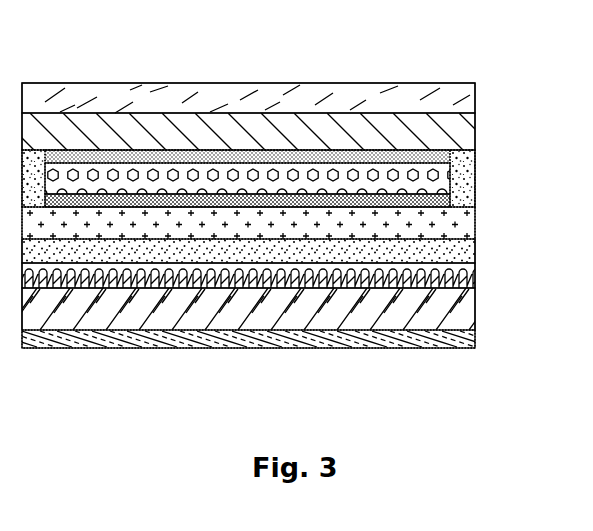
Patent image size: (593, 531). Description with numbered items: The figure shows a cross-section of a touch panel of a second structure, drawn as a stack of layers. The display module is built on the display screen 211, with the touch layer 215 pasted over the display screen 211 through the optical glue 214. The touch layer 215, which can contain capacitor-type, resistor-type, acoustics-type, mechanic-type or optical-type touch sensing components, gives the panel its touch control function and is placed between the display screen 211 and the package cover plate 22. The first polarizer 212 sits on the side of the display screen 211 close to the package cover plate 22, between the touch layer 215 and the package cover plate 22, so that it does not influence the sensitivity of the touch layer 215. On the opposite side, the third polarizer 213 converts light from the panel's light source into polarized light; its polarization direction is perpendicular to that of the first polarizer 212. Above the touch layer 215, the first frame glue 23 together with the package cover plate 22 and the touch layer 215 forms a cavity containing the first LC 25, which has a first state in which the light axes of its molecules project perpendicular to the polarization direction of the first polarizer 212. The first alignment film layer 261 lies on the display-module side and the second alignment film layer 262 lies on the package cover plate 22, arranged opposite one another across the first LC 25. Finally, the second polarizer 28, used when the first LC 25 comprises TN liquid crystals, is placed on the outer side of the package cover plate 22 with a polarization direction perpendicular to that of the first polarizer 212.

The second polarizer 28 is at (457, 97).
The package cover plate 22 is at (455, 130).
The first frame glue 23 is at (282, 120).
The first alignment film layer 261 is at (128, 202).
The second alignment film layer 262 is at (212, 158).
The first LC 25 is at (332, 178).
The display screen 211 is at (452, 303).
The first polarizer 212 is at (313, 277).
The third polarizer 213 is at (391, 336).
The optical glue 214 is at (230, 250).
The touch layer 215 is at (165, 228).